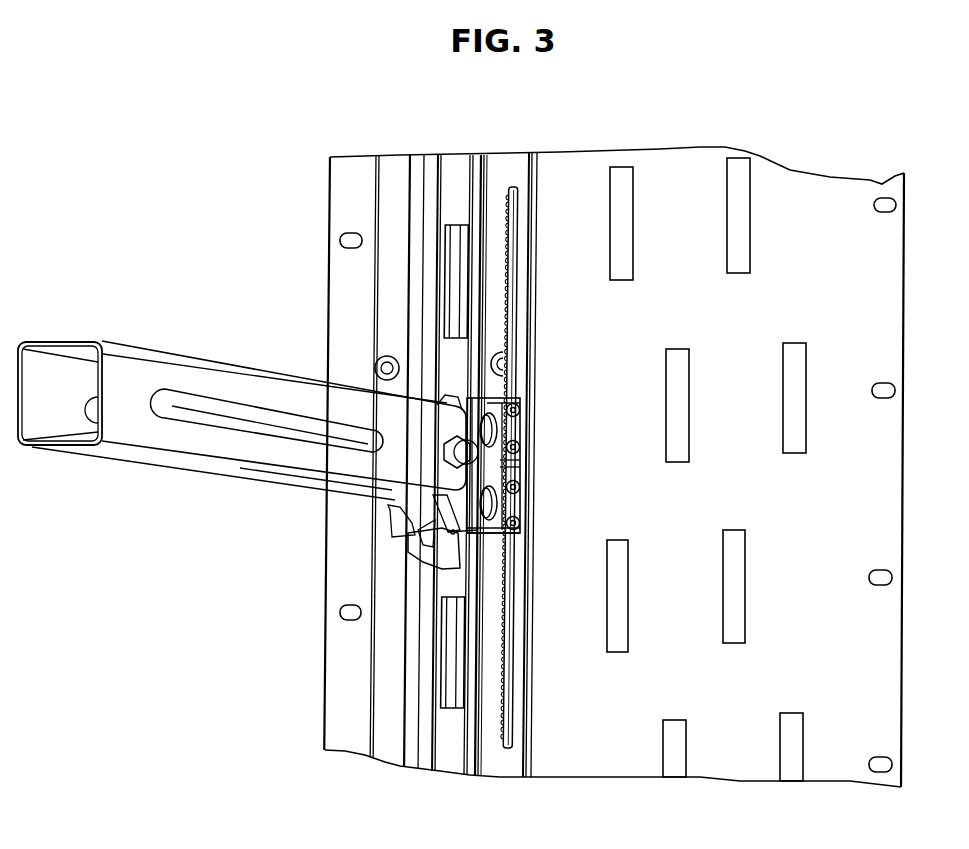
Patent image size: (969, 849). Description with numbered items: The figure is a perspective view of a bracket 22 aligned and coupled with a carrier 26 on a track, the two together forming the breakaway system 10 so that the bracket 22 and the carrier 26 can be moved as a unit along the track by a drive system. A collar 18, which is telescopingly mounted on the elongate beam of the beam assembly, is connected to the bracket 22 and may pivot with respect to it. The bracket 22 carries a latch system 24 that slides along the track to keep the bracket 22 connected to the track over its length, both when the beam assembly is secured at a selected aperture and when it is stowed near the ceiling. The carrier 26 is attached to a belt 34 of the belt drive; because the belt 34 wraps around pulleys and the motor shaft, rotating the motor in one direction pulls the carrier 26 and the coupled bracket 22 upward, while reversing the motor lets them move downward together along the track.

The breakaway system 10 is at (480, 570).
The collar 18 is at (232, 384).
The bracket 22 is at (460, 398).
The latch system 24 is at (408, 551).
The carrier 26 is at (503, 463).
The belt 34 is at (512, 628).